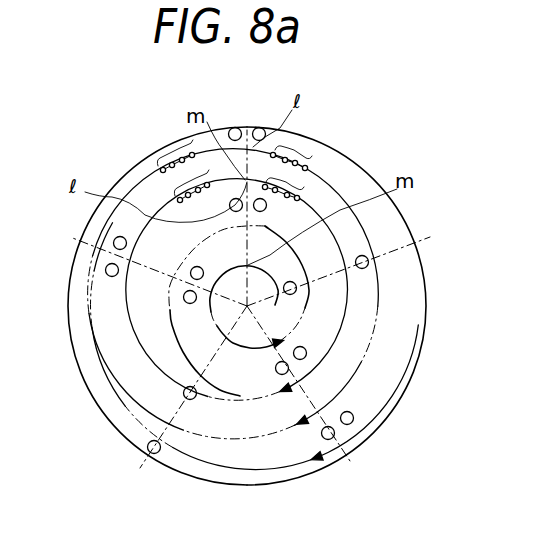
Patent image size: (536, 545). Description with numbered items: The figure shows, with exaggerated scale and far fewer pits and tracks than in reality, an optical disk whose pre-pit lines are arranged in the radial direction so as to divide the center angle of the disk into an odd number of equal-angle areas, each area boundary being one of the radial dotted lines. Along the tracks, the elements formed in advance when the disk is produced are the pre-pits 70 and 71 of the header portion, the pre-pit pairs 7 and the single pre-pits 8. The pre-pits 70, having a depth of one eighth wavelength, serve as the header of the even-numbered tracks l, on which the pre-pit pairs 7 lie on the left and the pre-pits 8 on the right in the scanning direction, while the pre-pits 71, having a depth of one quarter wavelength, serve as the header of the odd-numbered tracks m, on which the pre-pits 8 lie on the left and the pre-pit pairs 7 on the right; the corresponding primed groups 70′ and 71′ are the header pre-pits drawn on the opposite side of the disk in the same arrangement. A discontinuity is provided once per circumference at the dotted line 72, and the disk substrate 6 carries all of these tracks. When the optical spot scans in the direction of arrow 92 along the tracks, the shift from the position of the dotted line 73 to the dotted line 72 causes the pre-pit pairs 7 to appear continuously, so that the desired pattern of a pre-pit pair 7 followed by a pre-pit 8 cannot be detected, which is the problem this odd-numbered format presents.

The disk track 6 is at (345, 198).
The pre-pit pair 7 is at (259, 127).
The pre-pit 8 is at (370, 252).
The pre-pits 70 is at (292, 180).
The mark row 70′ is at (156, 180).
The pre-pits 71 is at (322, 185).
The mark row 71′ is at (172, 150).
The dotted line 72 is at (247, 127).
The dotted line 73 is at (145, 265).
The arrow 92 is at (296, 430).